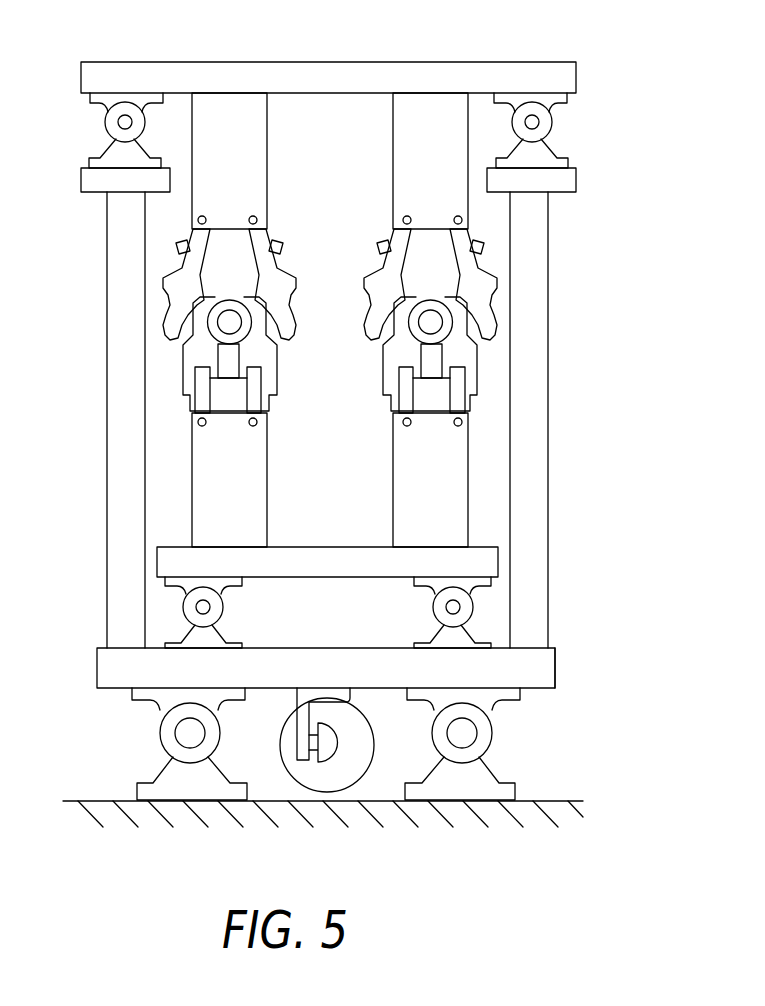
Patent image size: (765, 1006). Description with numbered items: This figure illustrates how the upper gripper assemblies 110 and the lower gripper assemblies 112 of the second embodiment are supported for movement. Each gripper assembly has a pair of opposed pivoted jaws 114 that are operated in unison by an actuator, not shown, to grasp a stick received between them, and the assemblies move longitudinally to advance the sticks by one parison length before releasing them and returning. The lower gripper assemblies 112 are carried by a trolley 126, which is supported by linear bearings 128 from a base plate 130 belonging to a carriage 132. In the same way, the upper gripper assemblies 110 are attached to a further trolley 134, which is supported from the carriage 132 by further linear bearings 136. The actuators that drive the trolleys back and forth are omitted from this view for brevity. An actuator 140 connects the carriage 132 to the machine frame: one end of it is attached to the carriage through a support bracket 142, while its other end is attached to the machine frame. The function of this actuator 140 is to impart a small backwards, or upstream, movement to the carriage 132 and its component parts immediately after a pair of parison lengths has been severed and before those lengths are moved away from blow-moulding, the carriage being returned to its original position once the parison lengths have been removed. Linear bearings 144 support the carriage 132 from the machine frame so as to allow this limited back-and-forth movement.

The upper gripper assembly 110 is at (178, 252).
The lower gripper assembly 112 is at (185, 367).
The opposed pivoted jaws 114 is at (258, 353).
The trolley 126 is at (172, 540).
The linear bearings 128 is at (165, 609).
The base plate 130 is at (278, 667).
The carriage 132 is at (540, 693).
The further trolley 134 is at (292, 58).
The further linear bearings 136 is at (110, 124).
The actuator 140 is at (347, 762).
The support bracket 142 is at (333, 695).
The linear bearings 144 is at (160, 733).